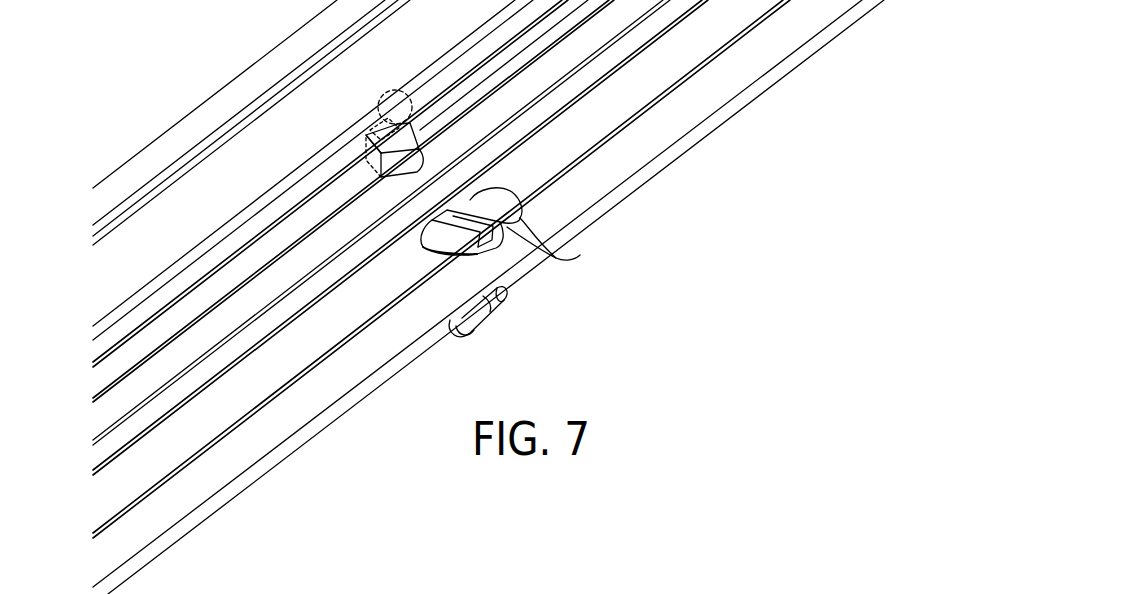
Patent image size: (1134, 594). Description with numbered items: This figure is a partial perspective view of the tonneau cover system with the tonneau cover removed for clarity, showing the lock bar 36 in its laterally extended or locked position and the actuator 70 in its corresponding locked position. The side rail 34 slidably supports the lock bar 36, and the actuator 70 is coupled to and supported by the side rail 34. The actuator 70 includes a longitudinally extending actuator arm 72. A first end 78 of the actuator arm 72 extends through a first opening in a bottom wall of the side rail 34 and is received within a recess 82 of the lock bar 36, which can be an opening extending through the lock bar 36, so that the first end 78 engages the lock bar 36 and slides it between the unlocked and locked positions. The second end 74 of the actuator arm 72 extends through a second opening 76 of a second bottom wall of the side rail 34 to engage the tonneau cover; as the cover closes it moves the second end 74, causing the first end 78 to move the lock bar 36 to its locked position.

The side rail 34 is at (716, 129).
The lock bar 36 is at (398, 190).
The actuator 70 is at (525, 278).
The actuator arm 72 is at (487, 307).
The second end 74 is at (463, 233).
The second opening 76 is at (507, 243).
The first end 78 is at (388, 127).
The recess 82 is at (404, 90).